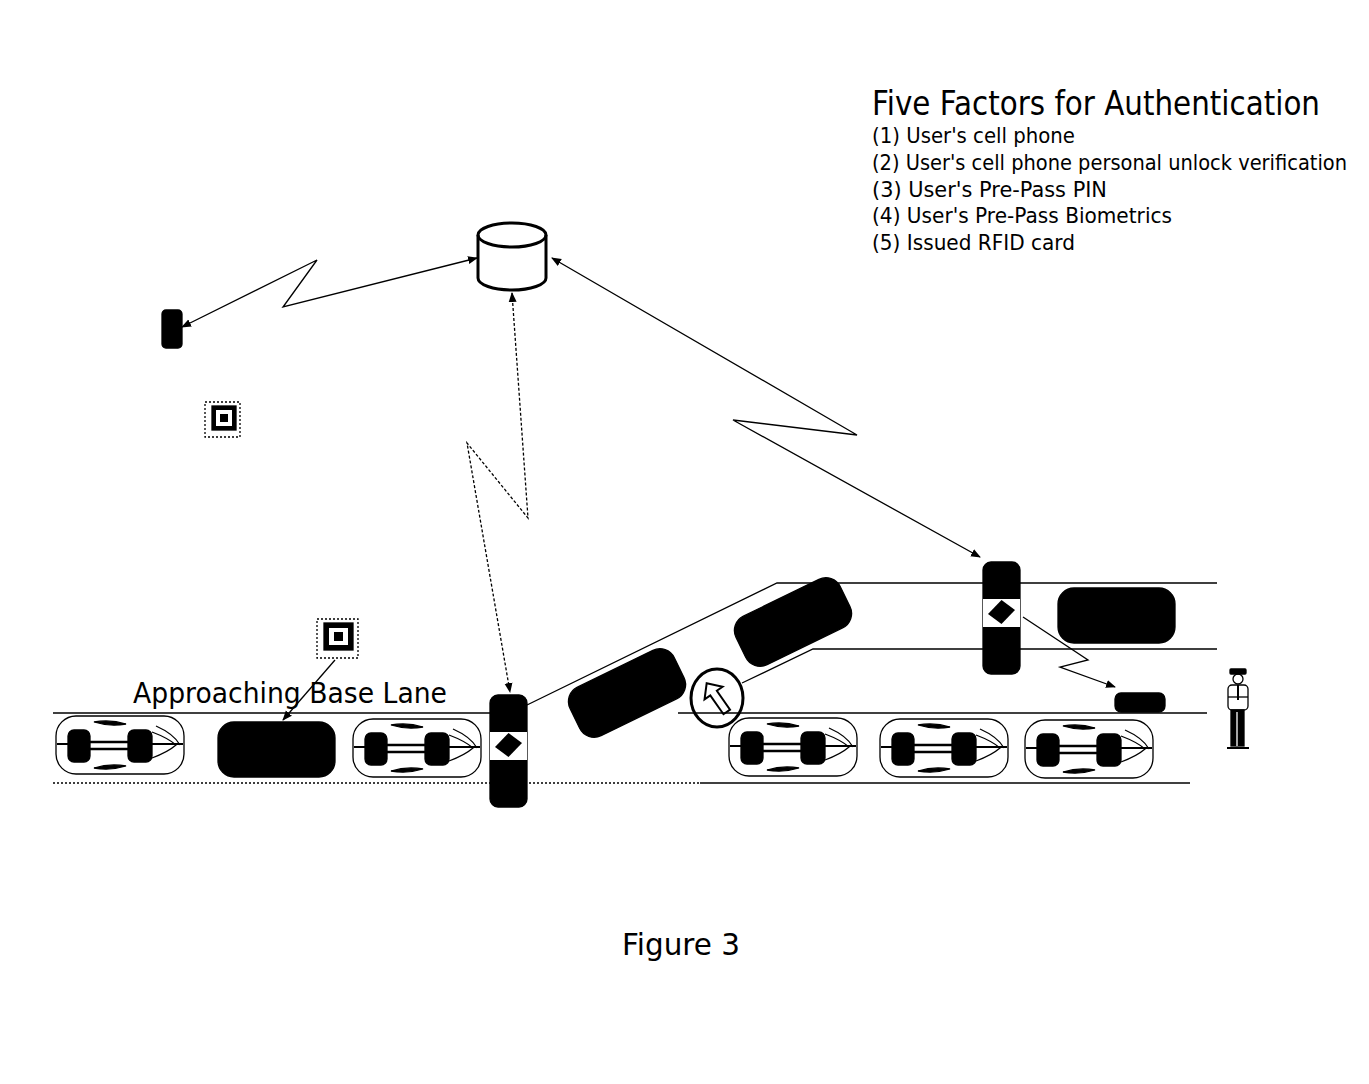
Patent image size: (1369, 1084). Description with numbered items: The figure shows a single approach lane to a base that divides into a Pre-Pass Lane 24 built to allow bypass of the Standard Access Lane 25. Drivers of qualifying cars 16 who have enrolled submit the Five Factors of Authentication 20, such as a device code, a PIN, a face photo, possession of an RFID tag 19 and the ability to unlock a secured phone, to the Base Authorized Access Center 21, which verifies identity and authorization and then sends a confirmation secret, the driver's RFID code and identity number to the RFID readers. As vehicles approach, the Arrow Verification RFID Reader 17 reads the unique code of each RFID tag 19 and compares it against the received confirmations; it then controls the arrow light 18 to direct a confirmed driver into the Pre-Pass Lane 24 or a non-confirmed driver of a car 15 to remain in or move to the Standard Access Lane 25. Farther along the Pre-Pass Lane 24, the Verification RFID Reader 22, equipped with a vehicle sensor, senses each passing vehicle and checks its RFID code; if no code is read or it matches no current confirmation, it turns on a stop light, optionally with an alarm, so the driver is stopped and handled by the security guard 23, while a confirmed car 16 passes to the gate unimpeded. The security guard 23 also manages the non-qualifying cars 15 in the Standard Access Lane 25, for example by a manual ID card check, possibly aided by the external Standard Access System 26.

The car that does not qualify for the Pre-Pass Lane 15 is at (113, 786).
The car that does qualify for the Pre-Pass Lane 16 is at (275, 785).
The Arrow Verification RFID Reader 17 is at (511, 810).
The arrow light 18 is at (702, 724).
The RFID tag 19 is at (236, 449).
The Five Factors of Authentication 20 is at (853, 168).
The Base Authorized Access Center 21 is at (512, 220).
The Verification RFID Reader 22 is at (1010, 559).
The security guard 23 is at (1254, 689).
The Pre-Pass Lane 24 is at (912, 623).
The Standard Access Lane 25 is at (871, 771).
The Standard Access System 26 is at (1168, 714).